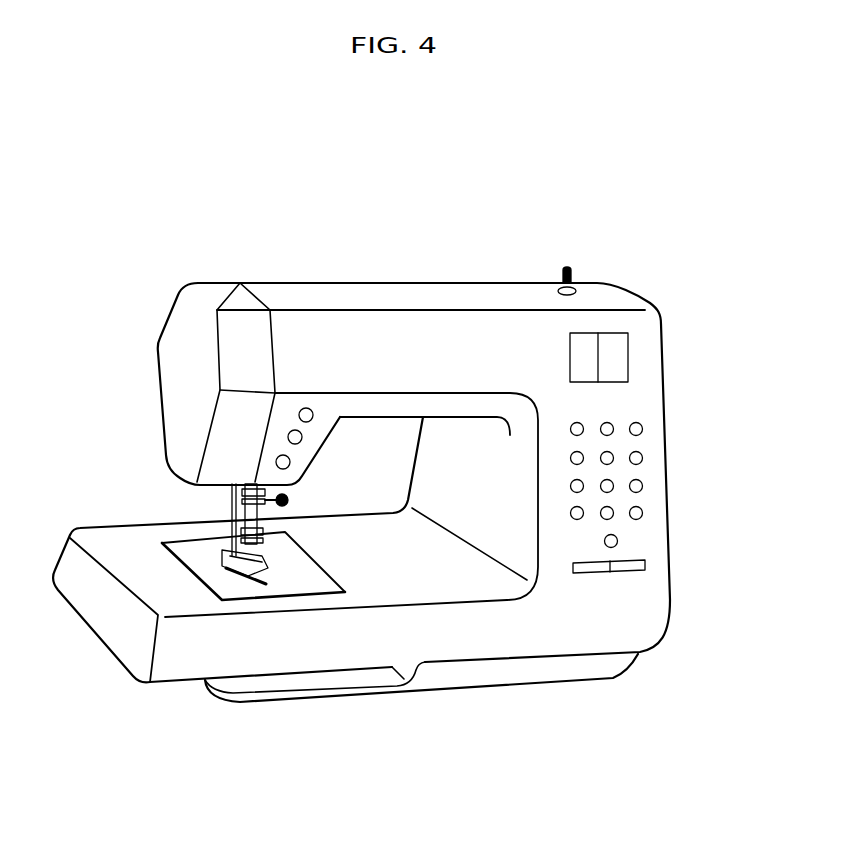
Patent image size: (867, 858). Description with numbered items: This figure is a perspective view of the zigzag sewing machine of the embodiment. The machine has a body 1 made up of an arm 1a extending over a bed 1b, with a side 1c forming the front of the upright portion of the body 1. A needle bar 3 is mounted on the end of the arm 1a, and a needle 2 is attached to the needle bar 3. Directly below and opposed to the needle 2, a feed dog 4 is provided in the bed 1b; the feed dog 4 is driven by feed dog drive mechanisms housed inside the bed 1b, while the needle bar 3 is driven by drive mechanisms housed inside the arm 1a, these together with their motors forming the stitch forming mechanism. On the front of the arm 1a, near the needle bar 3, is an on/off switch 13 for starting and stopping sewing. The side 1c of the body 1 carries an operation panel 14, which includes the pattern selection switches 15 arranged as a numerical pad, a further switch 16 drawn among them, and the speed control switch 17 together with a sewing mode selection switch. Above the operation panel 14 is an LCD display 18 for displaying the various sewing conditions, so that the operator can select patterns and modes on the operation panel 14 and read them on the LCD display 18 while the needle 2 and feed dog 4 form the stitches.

The body 1 is at (641, 287).
The arm 1a is at (305, 288).
The bed 1b is at (133, 537).
The side 1c is at (653, 400).
The needle 2 is at (265, 558).
The needle bar 3 is at (237, 518).
The feed dog 4 is at (266, 558).
The on/off switch 13 is at (290, 466).
The operation panel 14 is at (687, 515).
The pattern selection switches 15 is at (643, 458).
The button 16 is at (619, 541).
The speed control switch 17 is at (646, 565).
The LCD display 18 is at (622, 352).